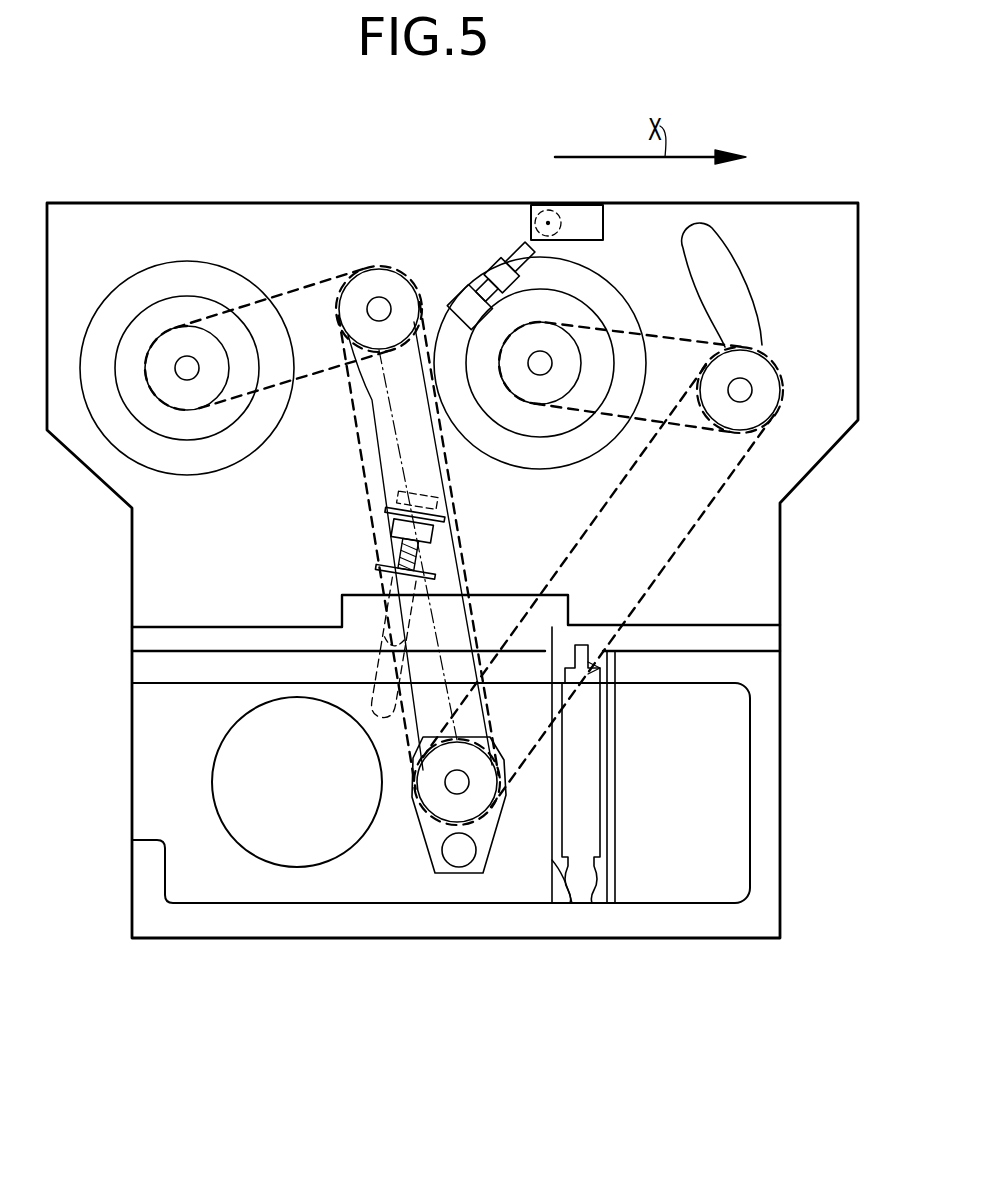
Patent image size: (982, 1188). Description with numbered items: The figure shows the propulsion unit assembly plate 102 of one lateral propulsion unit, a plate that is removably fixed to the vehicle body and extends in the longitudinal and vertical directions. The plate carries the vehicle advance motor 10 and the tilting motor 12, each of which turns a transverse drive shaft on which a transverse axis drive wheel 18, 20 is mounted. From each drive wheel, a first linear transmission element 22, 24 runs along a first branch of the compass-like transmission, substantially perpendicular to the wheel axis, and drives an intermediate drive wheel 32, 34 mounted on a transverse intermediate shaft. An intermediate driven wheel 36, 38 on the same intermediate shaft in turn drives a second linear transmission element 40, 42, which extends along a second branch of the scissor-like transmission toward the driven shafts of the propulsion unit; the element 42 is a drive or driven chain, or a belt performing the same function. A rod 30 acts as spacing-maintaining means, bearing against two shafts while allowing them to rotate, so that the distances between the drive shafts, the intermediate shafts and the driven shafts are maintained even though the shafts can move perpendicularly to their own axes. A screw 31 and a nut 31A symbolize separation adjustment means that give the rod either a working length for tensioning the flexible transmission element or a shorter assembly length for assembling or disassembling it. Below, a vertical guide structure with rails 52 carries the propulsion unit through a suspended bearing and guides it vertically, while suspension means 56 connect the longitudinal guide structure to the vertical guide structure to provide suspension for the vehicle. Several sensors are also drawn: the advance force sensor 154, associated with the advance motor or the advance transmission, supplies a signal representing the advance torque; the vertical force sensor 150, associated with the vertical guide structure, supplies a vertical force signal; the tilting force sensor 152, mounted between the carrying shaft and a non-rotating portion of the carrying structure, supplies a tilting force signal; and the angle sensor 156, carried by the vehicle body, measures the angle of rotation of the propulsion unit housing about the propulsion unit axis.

The vehicle advance motor 10 is at (545, 372).
The tilting motor 12 is at (182, 385).
The transverse axis drive wheel 18 is at (568, 388).
The transverse axis drive wheel 20 is at (210, 385).
The first linear transmission element 22 is at (690, 350).
The first linear transmission element 24 is at (303, 292).
The rod 30 is at (418, 448).
The screw 31 is at (432, 555).
The nut 31A is at (432, 522).
The intermediate drive wheel 32 is at (622, 407).
The intermediate driven wheel 36 is at (718, 440).
The intermediate drive wheel 34 is at (322, 528).
The intermediate driven wheel 38 is at (375, 443).
The second linear transmission element 40 is at (700, 525).
The second linear transmission element 42 is at (385, 523).
The vertical guide structure 52 is at (572, 905).
The suspension means 56 is at (595, 842).
The assembly plate 102 is at (860, 405).
The vertical force sensor 150 is at (602, 663).
The tilting force sensor 152 is at (463, 880).
The advance force sensor 154 is at (508, 240).
The angle sensor 156 is at (210, 760).